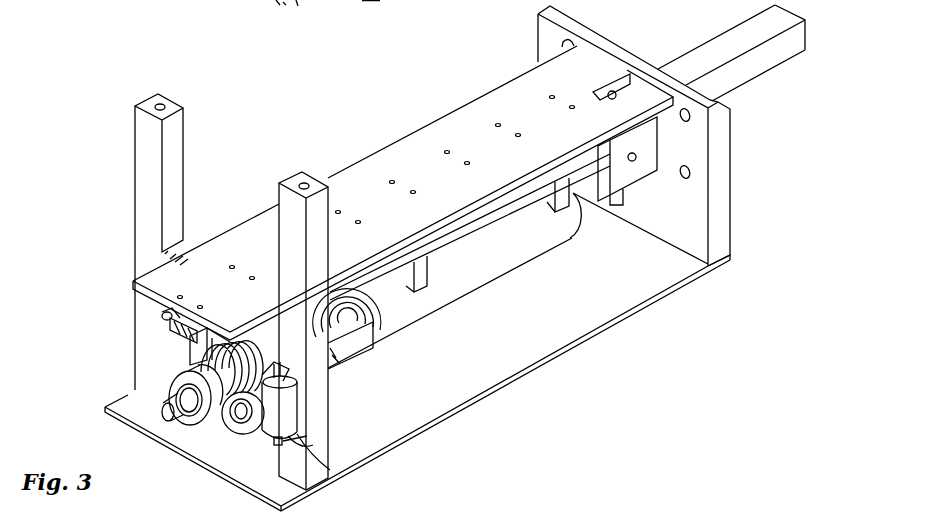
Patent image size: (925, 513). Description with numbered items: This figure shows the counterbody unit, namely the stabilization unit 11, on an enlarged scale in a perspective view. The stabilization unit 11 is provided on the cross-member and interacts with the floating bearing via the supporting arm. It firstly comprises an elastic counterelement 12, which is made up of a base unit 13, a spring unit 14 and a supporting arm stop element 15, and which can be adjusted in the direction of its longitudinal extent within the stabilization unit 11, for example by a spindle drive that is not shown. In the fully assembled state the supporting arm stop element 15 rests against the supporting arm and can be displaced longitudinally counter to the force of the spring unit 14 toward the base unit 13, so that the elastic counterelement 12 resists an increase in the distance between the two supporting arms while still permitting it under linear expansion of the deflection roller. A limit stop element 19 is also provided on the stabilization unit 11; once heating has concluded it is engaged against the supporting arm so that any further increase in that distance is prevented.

The stabilization unit 11 is at (437, 258).
The elastic counterelement 12 is at (447, 328).
The base unit 13 is at (498, 263).
The spring unit 14 is at (378, 328).
The supporting arm stop element 15 is at (165, 398).
The limit stop element 19 is at (300, 442).